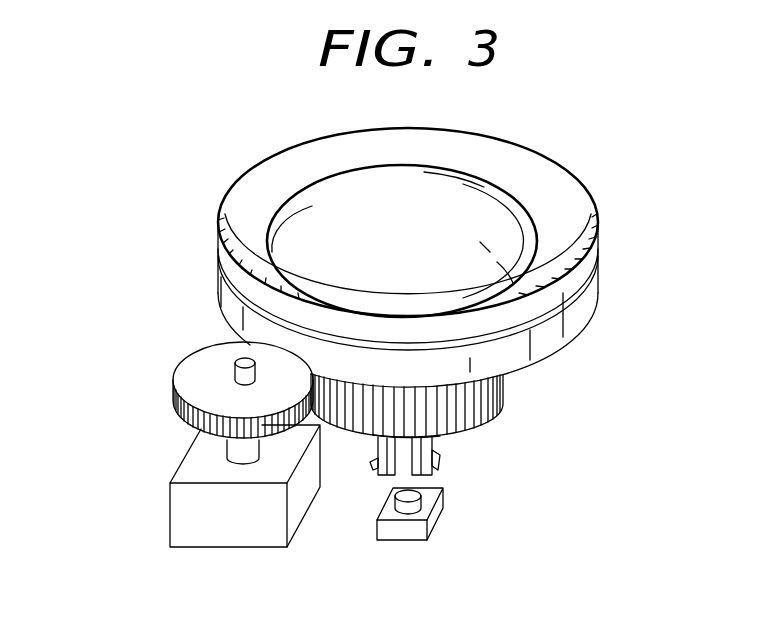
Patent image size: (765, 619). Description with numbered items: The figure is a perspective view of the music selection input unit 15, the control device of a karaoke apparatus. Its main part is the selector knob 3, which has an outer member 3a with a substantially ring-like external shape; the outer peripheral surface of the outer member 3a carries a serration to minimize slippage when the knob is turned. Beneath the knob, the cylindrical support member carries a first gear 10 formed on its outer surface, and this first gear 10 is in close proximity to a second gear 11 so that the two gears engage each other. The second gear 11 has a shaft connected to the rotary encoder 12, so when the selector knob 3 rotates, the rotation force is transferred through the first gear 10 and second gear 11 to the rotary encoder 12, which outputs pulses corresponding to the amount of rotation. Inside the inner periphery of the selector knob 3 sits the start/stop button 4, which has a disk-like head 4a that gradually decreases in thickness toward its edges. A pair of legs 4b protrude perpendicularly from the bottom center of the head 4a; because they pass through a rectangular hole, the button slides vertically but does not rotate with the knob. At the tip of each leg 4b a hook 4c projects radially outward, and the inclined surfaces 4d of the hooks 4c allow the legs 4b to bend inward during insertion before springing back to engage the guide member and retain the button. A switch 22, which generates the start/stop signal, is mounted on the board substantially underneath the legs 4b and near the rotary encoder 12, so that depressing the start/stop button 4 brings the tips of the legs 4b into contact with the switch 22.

The selector knob 3 is at (573, 247).
The outer member 3a is at (573, 302).
The start/stop button 4 is at (518, 210).
The disk-like head 4a is at (443, 202).
The legs 4b is at (437, 435).
The hook 4c is at (382, 467).
The inclined surfaces 4d is at (383, 470).
The first gear 10 is at (500, 384).
The second gear 11 is at (188, 362).
The rotary encoder 12 is at (200, 450).
The music selection input unit 15 is at (206, 228).
The switch 22 is at (467, 517).